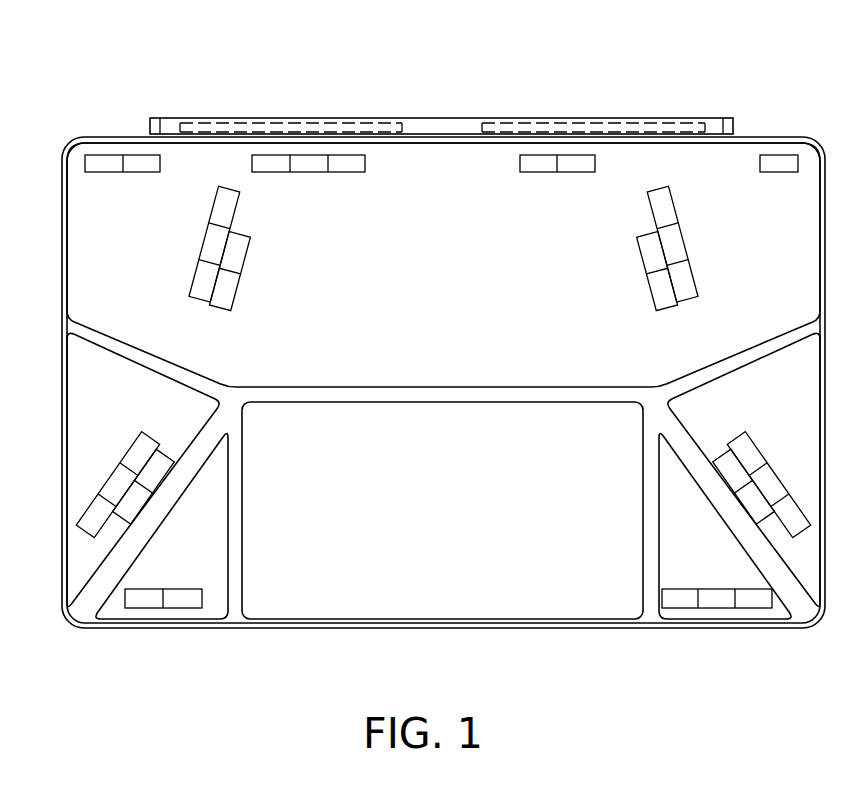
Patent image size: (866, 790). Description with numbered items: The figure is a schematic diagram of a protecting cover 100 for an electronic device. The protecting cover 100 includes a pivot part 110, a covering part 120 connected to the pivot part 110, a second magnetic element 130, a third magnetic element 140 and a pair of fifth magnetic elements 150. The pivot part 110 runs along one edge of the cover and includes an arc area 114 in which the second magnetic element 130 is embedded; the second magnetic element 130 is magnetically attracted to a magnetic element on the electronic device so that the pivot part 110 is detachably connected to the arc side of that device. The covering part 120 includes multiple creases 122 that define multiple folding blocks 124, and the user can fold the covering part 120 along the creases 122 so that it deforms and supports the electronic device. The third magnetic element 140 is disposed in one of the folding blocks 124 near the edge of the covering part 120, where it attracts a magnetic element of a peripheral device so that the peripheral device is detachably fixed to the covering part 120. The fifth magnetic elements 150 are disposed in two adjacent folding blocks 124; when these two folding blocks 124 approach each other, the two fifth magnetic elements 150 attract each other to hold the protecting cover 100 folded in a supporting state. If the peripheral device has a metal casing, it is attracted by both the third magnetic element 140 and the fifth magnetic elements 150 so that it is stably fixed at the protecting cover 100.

The protecting cover 100 is at (171, 72).
The pivot part 110 is at (732, 126).
The arc area 114 is at (460, 118).
The covering part 120 is at (597, 630).
The creases 122 is at (232, 592).
The folding blocks 124 is at (802, 588).
The second magnetic element 130 is at (605, 120).
The third magnetic element 140 is at (120, 160).
The fifth magnetic elements 150 is at (108, 473).